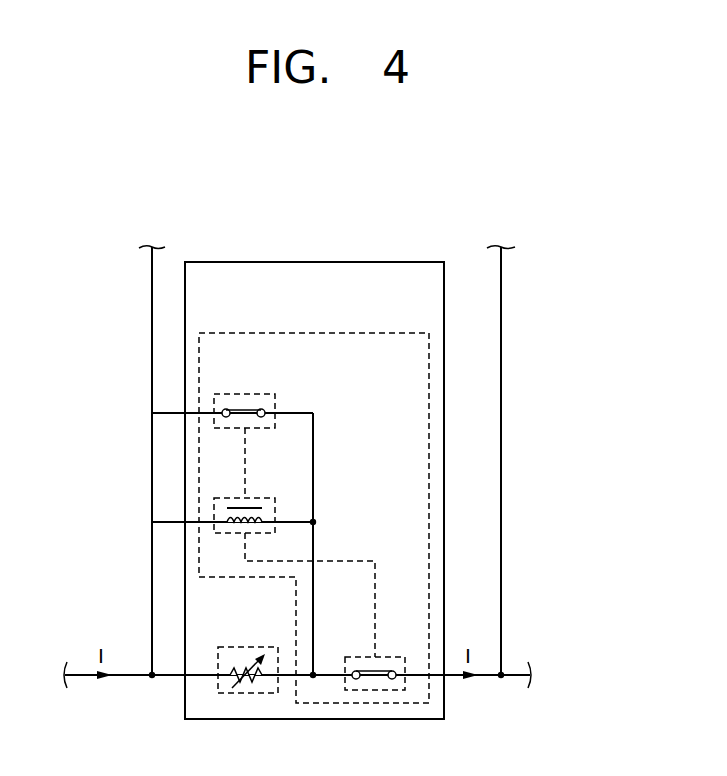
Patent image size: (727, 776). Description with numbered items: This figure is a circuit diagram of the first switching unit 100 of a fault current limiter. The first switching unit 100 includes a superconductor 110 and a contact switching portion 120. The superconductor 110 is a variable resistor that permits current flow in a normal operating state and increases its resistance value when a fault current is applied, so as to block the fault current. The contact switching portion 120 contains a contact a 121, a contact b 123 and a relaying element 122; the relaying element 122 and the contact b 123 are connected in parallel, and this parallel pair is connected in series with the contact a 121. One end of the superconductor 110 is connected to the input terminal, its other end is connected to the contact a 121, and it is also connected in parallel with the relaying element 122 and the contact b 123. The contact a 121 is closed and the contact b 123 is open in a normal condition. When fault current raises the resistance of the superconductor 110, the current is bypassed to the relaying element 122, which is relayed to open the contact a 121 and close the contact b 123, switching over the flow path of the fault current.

The first switching unit 100 is at (314, 262).
The superconductor 110 is at (250, 647).
The contact switching portion 120 is at (360, 333).
The contact a 121 is at (400, 657).
The relaying element 122 is at (268, 498).
The contact b 123 is at (246, 394).